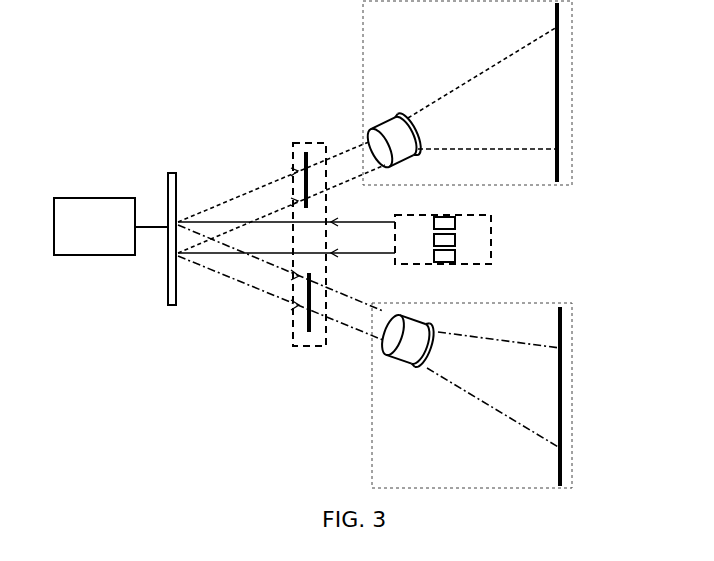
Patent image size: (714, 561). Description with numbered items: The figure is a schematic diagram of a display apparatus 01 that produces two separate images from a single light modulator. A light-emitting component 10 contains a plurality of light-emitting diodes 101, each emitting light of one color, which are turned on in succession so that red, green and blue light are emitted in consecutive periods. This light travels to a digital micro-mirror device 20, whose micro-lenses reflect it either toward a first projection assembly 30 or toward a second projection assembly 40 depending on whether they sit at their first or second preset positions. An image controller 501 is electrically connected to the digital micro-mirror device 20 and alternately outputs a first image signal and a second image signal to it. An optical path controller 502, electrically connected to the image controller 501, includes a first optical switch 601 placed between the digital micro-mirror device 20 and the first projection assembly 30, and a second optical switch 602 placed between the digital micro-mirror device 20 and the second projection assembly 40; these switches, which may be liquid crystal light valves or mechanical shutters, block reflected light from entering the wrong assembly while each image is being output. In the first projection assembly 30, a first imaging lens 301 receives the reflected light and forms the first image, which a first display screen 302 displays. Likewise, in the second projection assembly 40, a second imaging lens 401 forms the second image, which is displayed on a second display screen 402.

The display apparatus 01 is at (122, 108).
The image controller 501 is at (74, 206).
The digital micro-mirror device 20 is at (175, 288).
The optical path controller 502 is at (300, 347).
The first optical switch 601 is at (300, 178).
The second optical switch 602 is at (300, 305).
The first projection assembly 30 is at (382, 52).
The first imaging lens 301 is at (370, 128).
The first display screen 302 is at (560, 102).
The light-emitting component 10 is at (491, 240).
The light-emitting diodes 101 is at (455, 243).
The second projection assembly 40 is at (393, 417).
The second imaging lens 401 is at (405, 355).
The second display screen 402 is at (562, 388).